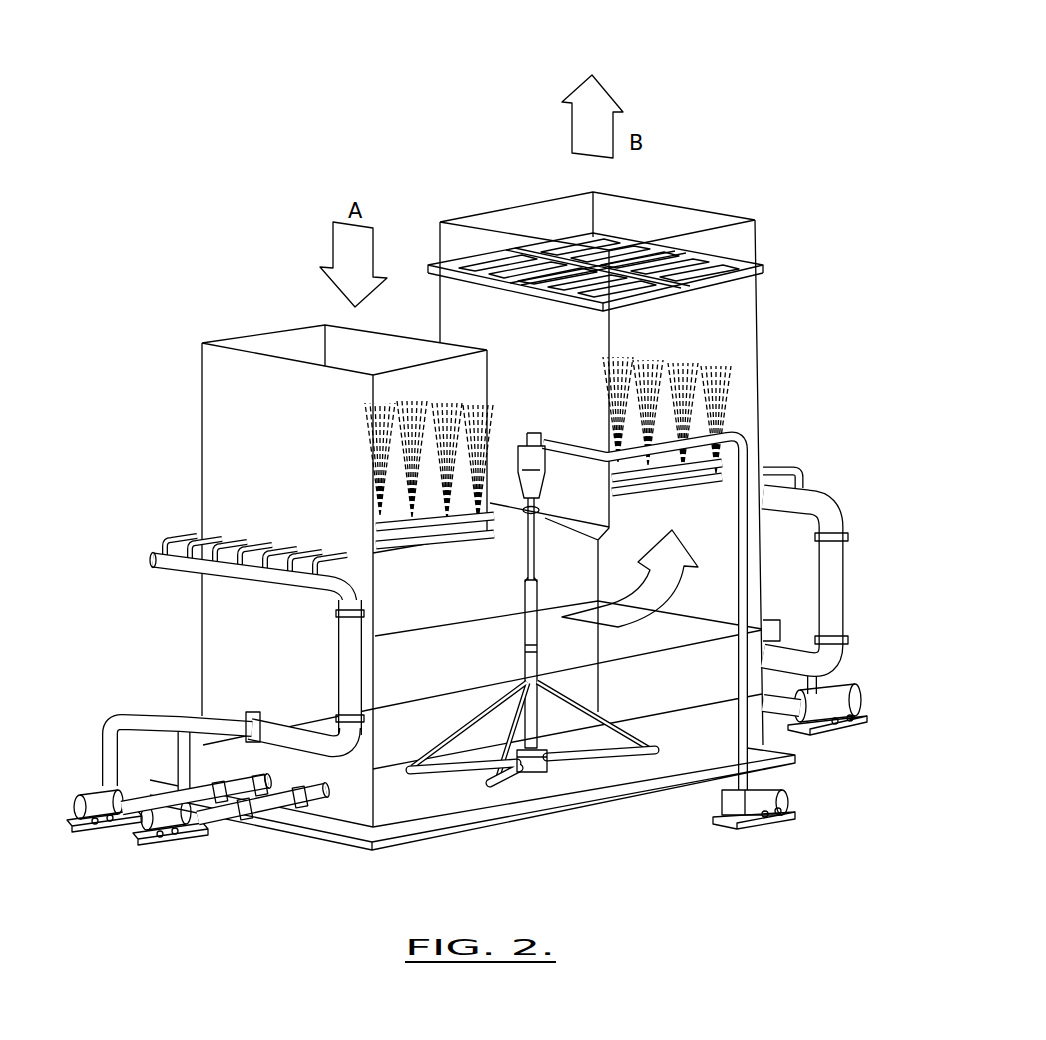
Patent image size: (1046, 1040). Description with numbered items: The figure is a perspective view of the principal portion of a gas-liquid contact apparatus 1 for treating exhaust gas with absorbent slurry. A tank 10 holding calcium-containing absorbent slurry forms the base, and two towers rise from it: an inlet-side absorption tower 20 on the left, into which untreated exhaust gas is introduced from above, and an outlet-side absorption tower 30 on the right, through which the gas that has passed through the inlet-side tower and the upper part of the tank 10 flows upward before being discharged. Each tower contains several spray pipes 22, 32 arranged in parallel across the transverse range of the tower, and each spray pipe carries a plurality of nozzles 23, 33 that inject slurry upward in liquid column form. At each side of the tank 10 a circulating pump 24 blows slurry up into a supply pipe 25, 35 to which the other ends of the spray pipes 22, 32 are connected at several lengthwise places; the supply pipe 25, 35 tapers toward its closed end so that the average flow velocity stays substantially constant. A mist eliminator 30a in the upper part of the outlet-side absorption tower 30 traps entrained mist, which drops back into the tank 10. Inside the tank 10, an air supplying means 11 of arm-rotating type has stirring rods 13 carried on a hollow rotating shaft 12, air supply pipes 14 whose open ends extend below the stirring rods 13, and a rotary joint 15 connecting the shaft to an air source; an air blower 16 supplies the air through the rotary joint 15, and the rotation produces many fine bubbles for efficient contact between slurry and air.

The gas-liquid contact apparatus 1 is at (230, 232).
The tank 10 is at (445, 835).
The air supplying means 11 is at (612, 703).
The hollow rotating shaft 12 is at (523, 658).
The stirring rods 13 is at (602, 767).
The air supply pipes 14 is at (450, 732).
The rotary joint 15 is at (537, 433).
The air blower 16 is at (755, 808).
The inlet-side absorption tower 20 is at (192, 407).
The spray pipes 22 is at (398, 553).
The nozzles 23 is at (478, 522).
The circulating pump 24 is at (93, 793).
The supply pipe 25 is at (250, 590).
The outlet-side absorption tower 30 is at (765, 375).
The mist eliminator 30a is at (720, 282).
The spray pipes 32 is at (697, 483).
The nozzles 33 is at (720, 478).
The supply pipe 35 is at (785, 493).